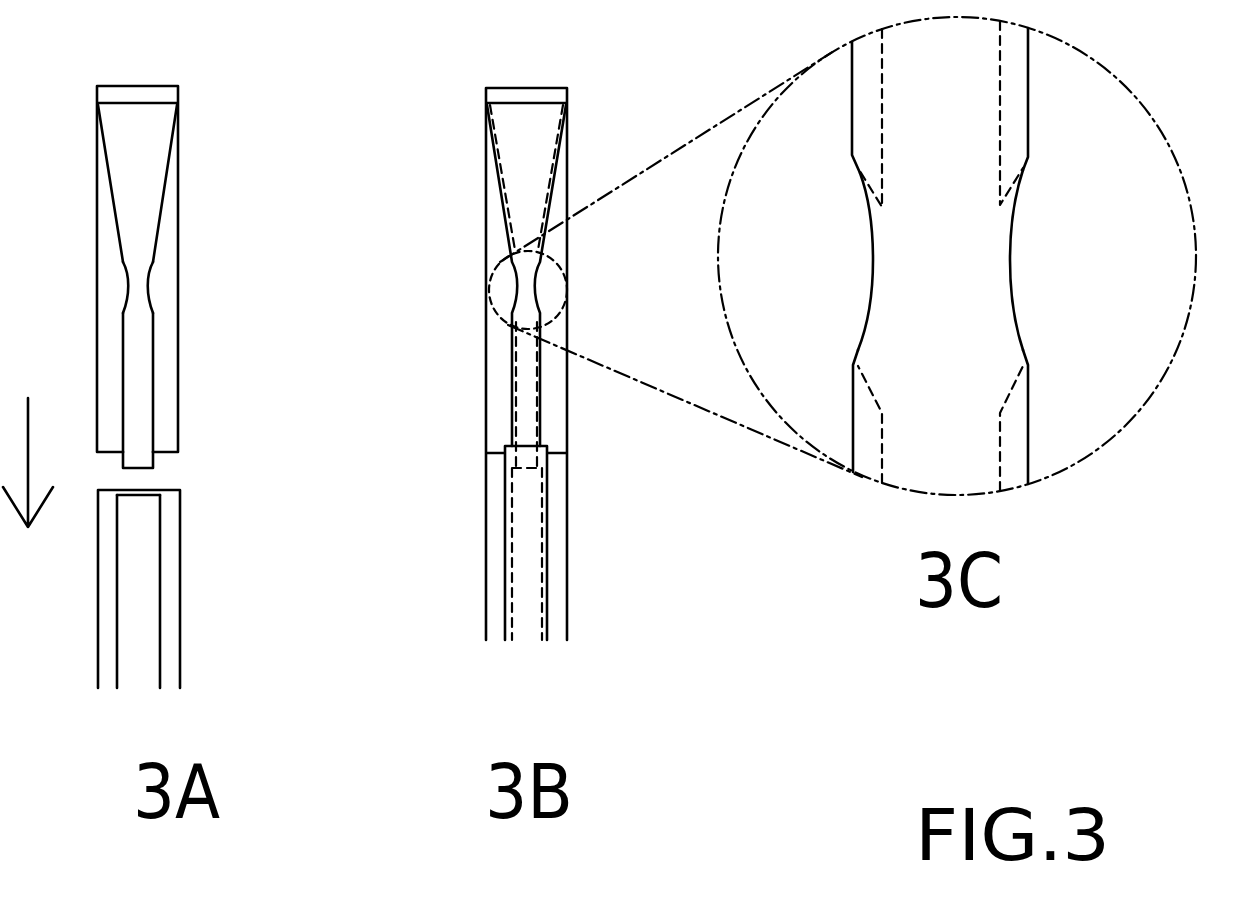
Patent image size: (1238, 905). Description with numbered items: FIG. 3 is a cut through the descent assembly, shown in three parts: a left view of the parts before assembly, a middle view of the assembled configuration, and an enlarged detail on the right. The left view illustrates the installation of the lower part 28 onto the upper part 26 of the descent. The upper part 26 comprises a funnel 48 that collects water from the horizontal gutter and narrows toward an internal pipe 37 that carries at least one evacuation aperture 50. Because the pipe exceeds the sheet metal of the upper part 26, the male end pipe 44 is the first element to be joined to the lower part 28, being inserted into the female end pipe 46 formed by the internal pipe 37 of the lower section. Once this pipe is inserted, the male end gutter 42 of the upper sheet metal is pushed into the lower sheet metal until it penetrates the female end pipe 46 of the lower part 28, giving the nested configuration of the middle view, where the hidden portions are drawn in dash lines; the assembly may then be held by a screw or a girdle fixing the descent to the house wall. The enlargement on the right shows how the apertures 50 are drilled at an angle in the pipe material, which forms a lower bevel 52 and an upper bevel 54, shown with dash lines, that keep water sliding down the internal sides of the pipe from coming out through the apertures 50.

The upper part of the descent assembly 26 is at (180, 350).
The lower part of the descent assembly 28 is at (180, 630).
The internal pipe 37 is at (145, 577).
The male end gutter 42 is at (180, 442).
The male end pipe 44 is at (148, 462).
The female end pipe 46 is at (140, 495).
The funnel 48 is at (143, 157).
The apertures 50 is at (148, 288).
The lower bevel 52 is at (1012, 393).
The upper bevel 54 is at (1008, 192).